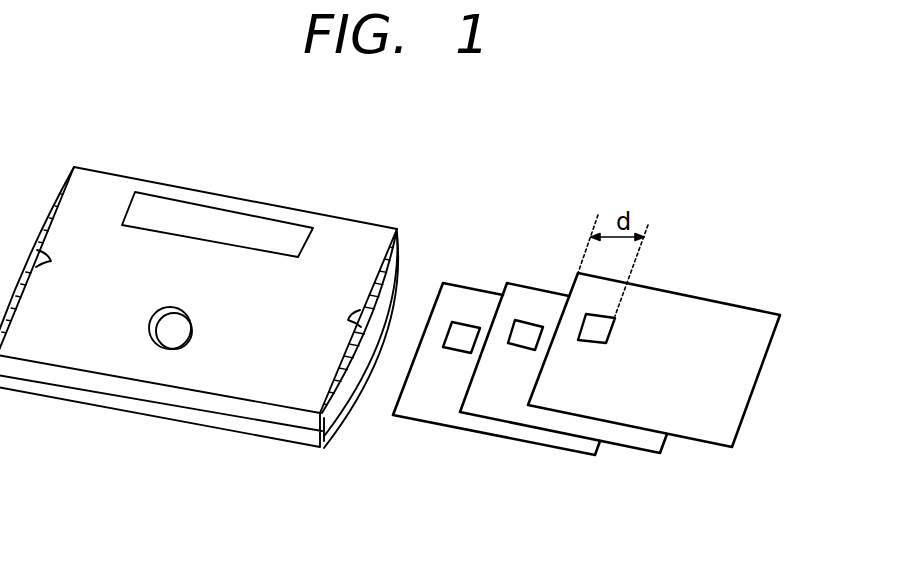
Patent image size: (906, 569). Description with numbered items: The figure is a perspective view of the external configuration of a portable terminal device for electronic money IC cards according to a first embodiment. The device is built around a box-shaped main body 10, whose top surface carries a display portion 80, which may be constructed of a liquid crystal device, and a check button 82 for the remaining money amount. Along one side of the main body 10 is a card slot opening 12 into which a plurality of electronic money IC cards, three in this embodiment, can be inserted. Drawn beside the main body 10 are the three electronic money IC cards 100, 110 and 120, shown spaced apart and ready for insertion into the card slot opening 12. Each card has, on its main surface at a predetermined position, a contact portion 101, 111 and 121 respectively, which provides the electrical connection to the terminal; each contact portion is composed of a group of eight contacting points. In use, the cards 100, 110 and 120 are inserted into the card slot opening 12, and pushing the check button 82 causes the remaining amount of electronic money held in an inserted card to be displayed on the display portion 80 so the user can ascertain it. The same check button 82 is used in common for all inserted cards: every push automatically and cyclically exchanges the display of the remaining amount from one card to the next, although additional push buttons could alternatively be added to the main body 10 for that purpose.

The main body 10 is at (88, 397).
The card slot opening 12 is at (392, 300).
The display portion 80 is at (246, 220).
The check button for remaining money amount 82 is at (178, 347).
The electronic money IC card 100 is at (472, 300).
The contact portion 101 is at (458, 345).
The electronic money IC card 110 is at (538, 295).
The contact portion 111 is at (522, 345).
The electronic money IC card 120 is at (662, 303).
The contact portion 121 is at (590, 338).